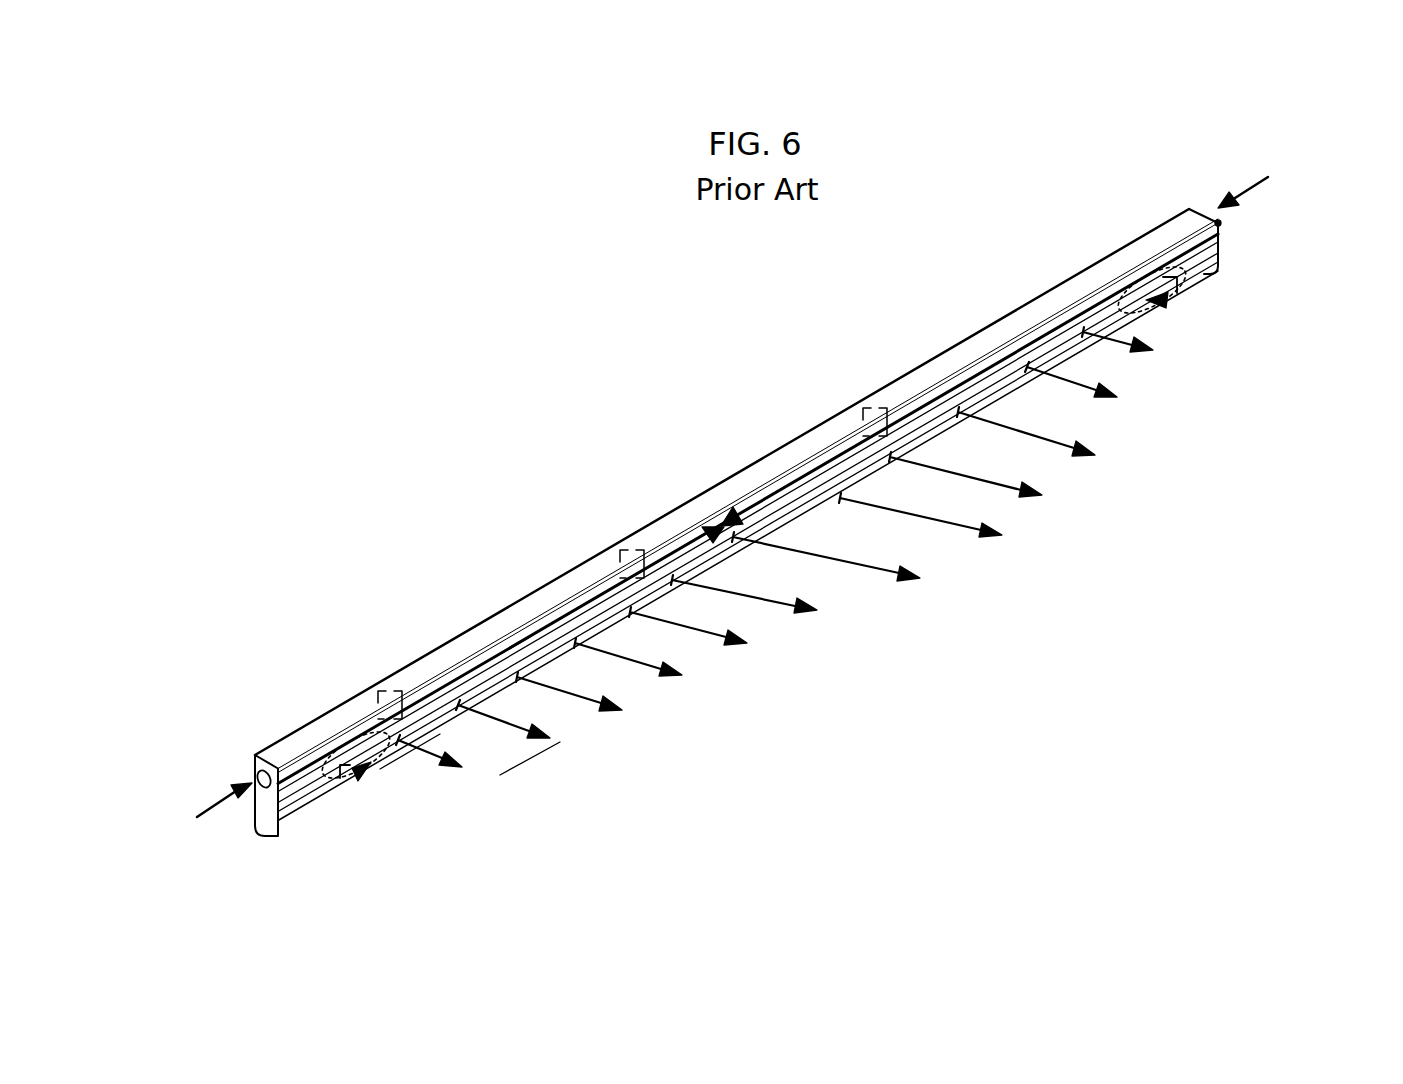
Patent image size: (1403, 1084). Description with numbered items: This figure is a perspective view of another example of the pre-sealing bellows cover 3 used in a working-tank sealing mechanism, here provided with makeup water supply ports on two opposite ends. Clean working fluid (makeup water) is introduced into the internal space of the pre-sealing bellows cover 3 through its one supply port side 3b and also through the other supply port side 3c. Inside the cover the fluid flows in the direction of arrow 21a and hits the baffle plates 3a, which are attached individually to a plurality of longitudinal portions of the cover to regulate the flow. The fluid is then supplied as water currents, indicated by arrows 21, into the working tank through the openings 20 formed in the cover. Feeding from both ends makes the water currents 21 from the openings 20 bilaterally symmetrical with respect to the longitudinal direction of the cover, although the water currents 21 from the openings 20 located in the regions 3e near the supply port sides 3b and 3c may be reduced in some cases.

The pre-sealing bellows cover 3 is at (1022, 291).
The baffle plate 3a is at (369, 684).
The supply port side 3b is at (244, 753).
The other supply port side 3c is at (1188, 196).
The region 3e is at (345, 786).
The opening 20 is at (397, 770).
The water current 21 is at (547, 752).
The direction of flow 21a is at (502, 641).